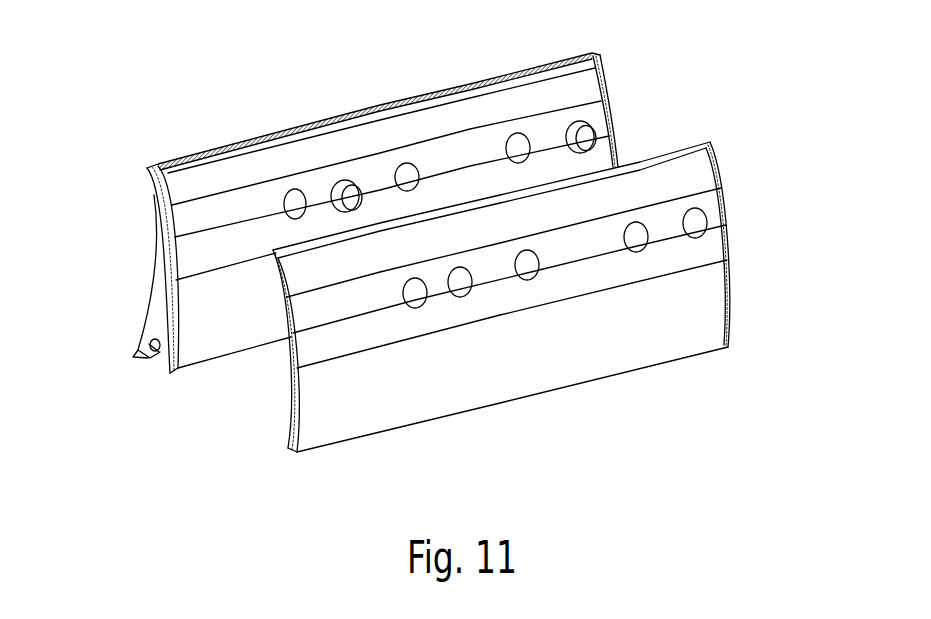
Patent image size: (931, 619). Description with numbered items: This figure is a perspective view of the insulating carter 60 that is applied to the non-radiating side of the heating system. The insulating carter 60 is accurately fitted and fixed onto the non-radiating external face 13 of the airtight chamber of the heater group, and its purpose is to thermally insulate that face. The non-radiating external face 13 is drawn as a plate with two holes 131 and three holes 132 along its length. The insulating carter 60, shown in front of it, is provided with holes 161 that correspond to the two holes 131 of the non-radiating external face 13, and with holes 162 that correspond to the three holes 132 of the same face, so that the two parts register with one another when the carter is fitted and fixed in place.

The non-radiating external face 13 is at (607, 80).
The holes 131 is at (348, 195).
The holes 132 is at (296, 204).
The insulating carter 60 is at (714, 150).
The holes 161 is at (460, 297).
The holes 162 is at (413, 308).